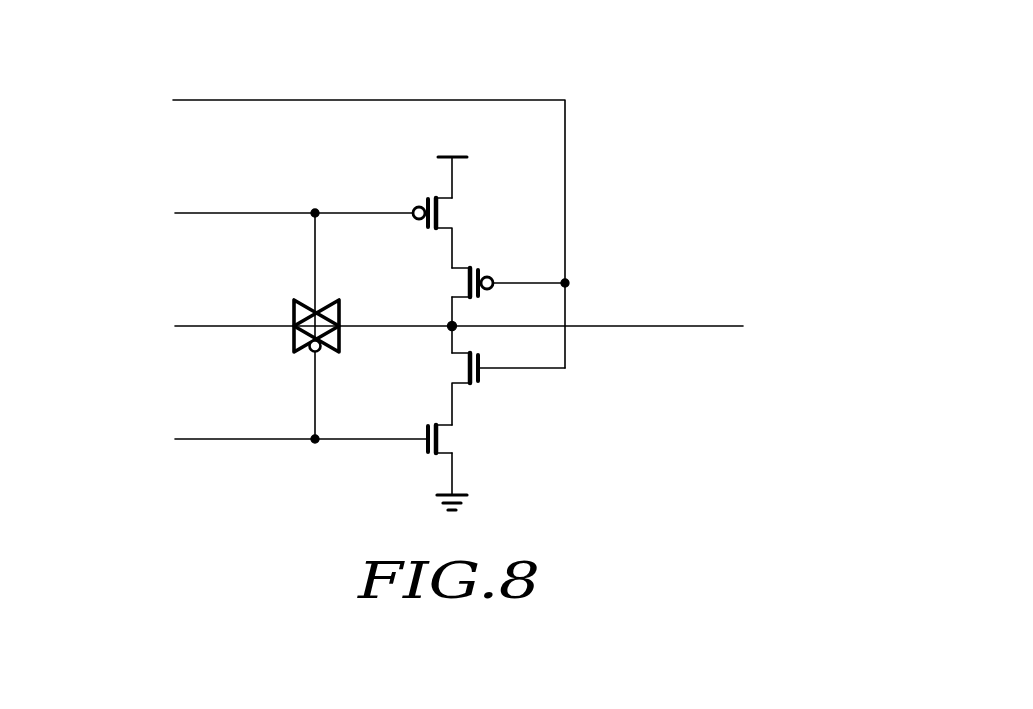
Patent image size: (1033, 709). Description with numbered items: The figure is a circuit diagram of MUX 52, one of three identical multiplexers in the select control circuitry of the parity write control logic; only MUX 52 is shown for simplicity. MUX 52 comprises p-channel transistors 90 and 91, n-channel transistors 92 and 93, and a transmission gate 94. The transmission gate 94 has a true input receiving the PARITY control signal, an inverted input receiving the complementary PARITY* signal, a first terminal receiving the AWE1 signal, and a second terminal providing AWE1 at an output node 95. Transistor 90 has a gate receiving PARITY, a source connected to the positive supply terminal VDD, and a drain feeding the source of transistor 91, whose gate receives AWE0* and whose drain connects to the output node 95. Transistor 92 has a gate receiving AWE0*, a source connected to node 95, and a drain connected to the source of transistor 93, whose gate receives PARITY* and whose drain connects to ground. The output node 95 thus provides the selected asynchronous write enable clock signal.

The MUX 52 is at (703, 58).
The p-channel transistor 90 is at (442, 196).
The p-channel transistor 91 is at (466, 268).
The n-channel transistor 92 is at (467, 386).
The n-channel transistor 93 is at (442, 424).
The transmission gate 94 is at (340, 316).
The output node 95 is at (452, 321).